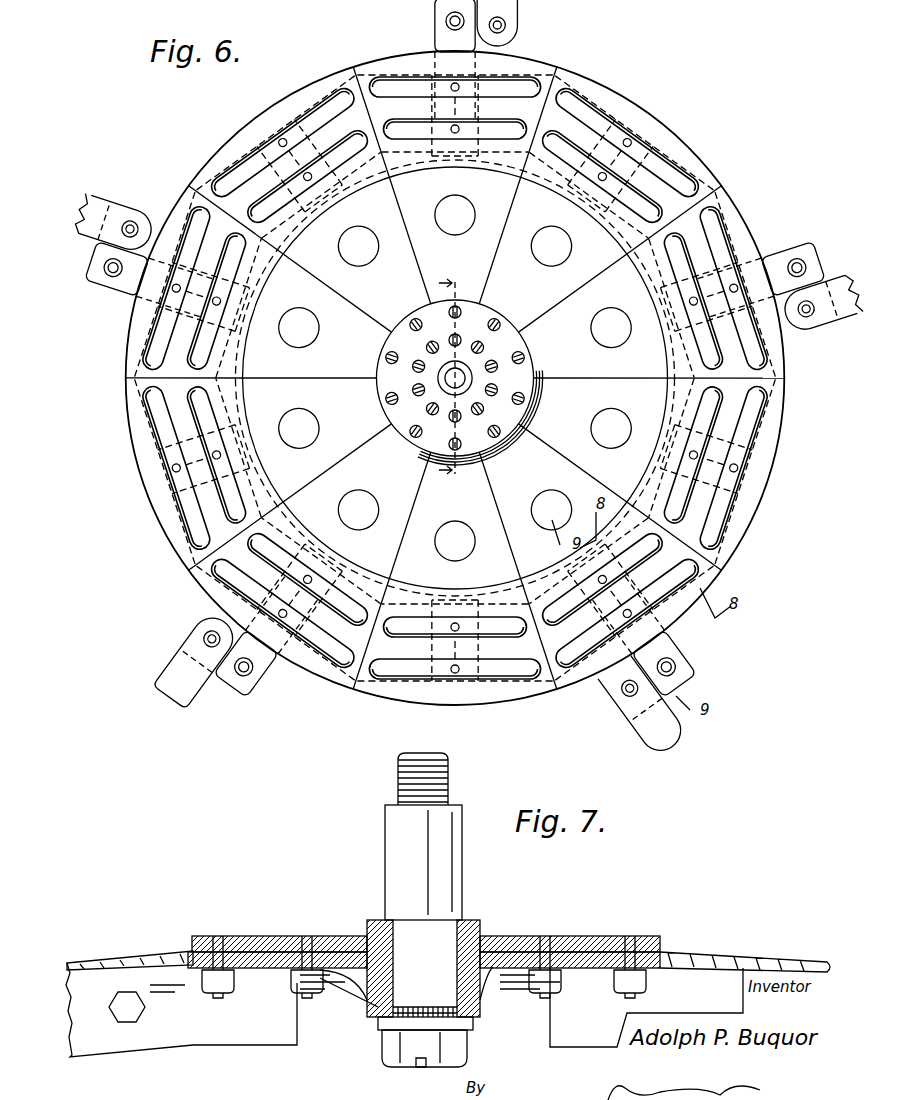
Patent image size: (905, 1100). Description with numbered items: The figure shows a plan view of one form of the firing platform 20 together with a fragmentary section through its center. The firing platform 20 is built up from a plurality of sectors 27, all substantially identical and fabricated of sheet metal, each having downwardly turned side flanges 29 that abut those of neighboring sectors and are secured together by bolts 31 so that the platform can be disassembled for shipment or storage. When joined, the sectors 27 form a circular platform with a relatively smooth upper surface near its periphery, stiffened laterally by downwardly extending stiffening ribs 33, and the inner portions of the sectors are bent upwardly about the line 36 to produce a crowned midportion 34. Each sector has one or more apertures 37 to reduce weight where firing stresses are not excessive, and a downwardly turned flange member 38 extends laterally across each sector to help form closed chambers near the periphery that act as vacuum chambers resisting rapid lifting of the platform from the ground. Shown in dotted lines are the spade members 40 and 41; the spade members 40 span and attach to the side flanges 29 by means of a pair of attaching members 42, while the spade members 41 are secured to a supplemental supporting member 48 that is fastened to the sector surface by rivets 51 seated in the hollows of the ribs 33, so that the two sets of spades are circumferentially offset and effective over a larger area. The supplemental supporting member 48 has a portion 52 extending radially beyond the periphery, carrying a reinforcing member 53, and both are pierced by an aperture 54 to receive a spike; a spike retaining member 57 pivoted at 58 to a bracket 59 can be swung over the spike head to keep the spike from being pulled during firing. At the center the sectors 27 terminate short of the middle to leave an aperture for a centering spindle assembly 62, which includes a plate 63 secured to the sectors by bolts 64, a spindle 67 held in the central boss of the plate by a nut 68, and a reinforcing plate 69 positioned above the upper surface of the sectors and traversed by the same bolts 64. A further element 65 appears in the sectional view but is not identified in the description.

In FIG. 6, the firing platform 20 is at (262, 110).
In FIG. 6, the sectors 27 is at (652, 128).
In FIG. 7, the sectors 27 is at (118, 962).
In FIG. 7, the side flanges 29 is at (268, 1046).
In FIG. 7, the bolts 31 is at (128, 1014).
In FIG. 6, the stiffening ribs 33 is at (662, 194).
In FIG. 6, the crowned midportion 34 is at (412, 314).
In FIG. 6, the line 36 is at (412, 592).
In FIG. 6, the apertures 37 is at (485, 232).
In FIG. 6, the flange member 38 is at (673, 364).
In FIG. 6, the spade members 40 is at (578, 76).
In FIG. 6, the spade members 41 is at (438, 172).
In FIG. 6, the attaching members 42 is at (275, 180).
In FIG. 6, the supplemental supporting member 48 is at (430, 75).
In FIG. 6, the rivets 51 is at (600, 158).
In FIG. 6, the portion 52 is at (96, 292).
In FIG. 6, the reinforcing member 53 is at (126, 292).
In FIG. 6, the aperture 54 is at (110, 267).
In FIG. 6, the spike retaining member 57 is at (623, 728).
In FIG. 6, the pivot 58 is at (200, 631).
In FIG. 6, the bracket 59 is at (519, 49).
In FIG. 6, the centering spindle assembly 62 is at (405, 459).
In FIG. 7, the centering spindle assembly 62 is at (380, 902).
In FIG. 7, the plate 63 is at (597, 970).
In FIG. 6, the bolts 64 is at (530, 368).
In FIG. 7, the bolts 64 is at (222, 996).
In FIG. 7, the bracket 65 is at (376, 1010).
In FIG. 6, the spindle 67 is at (452, 398).
In FIG. 7, the spindle 67 is at (395, 838).
In FIG. 7, the nut 68 is at (392, 1068).
In FIG. 6, the reinforcing plate 69 is at (386, 366).
In FIG. 7, the reinforcing plate 69 is at (255, 937).